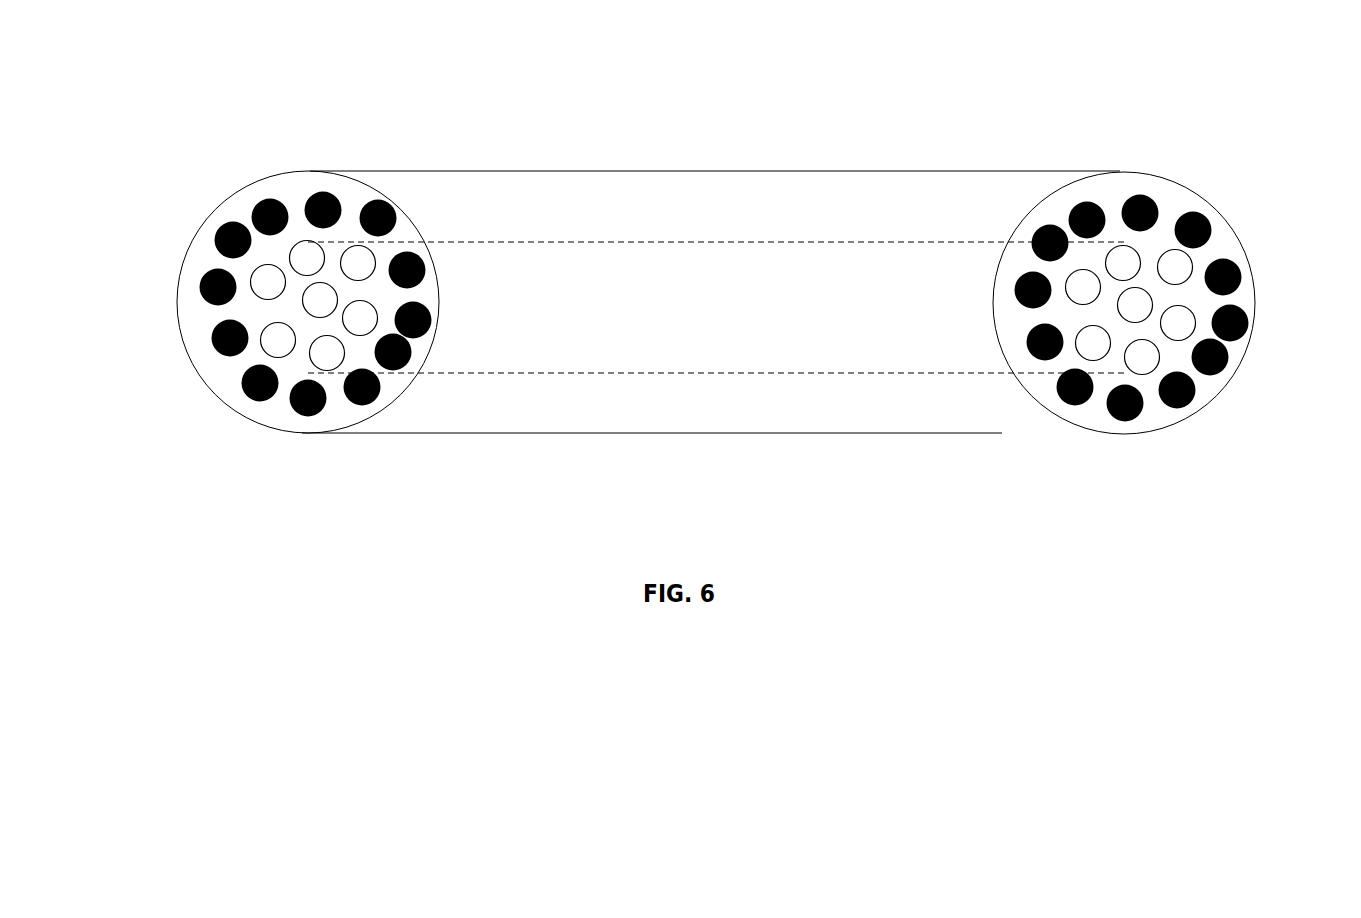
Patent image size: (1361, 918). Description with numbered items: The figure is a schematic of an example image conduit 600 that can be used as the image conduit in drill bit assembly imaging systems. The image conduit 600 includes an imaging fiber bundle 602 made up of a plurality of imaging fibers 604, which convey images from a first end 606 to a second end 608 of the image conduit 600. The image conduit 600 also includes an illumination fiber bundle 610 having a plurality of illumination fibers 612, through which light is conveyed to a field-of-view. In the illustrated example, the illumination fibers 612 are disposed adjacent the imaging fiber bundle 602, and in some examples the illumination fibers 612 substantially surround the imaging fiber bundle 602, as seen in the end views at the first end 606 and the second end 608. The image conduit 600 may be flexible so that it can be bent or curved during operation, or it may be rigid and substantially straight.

The image conduit 600 is at (520, 102).
The imaging fiber bundle 602 is at (716, 307).
The imaging fibers 604 is at (322, 300).
The first end 606 is at (307, 182).
The second end 608 is at (1168, 193).
The illumination fiber bundle 610 is at (711, 302).
The illumination fibers 612 is at (360, 395).